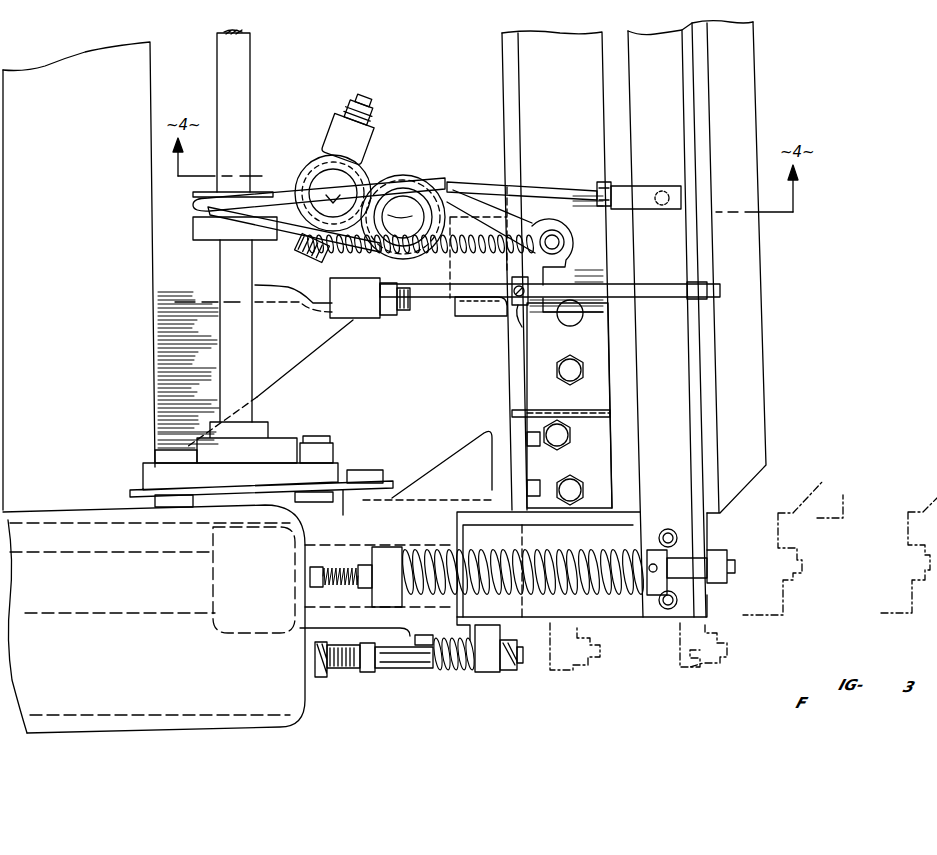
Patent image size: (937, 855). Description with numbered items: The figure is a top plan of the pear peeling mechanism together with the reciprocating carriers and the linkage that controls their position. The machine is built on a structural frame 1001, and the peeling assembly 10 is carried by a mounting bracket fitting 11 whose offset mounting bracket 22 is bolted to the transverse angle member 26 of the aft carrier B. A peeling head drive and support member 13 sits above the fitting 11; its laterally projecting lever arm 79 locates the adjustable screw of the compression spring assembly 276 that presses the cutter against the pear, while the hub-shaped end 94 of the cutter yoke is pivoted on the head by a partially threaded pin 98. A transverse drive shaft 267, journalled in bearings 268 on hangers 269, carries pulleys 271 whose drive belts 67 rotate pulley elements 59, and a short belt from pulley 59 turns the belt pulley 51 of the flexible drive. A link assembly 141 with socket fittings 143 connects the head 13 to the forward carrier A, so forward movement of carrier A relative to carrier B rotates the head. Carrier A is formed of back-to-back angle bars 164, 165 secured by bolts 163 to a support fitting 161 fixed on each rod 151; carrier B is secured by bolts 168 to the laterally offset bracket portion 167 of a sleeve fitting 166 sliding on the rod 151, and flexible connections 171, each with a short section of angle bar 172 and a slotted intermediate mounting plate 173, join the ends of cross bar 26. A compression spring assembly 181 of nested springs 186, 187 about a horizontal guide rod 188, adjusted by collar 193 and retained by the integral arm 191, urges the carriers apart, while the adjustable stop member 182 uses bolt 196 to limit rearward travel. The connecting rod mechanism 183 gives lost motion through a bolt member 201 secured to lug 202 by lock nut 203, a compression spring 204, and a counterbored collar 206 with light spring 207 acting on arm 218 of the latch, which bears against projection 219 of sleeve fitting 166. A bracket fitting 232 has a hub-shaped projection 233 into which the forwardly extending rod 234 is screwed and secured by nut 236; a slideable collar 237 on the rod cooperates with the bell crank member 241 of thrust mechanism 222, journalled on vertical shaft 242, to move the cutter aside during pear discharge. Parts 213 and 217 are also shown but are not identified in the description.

The structural frame 1001 is at (150, 107).
The transverse drive shaft 267 is at (248, 88).
The pulleys 271 is at (215, 238).
The drive belts 67 is at (195, 206).
The peeling head drive and support member 13 is at (304, 157).
The belt pulley 51 is at (320, 178).
The pulley elements 59 is at (405, 176).
The hub-shaped end 94 is at (333, 140).
The partially threaded pin 98 is at (366, 103).
The compression spring assembly 276 is at (328, 258).
The pear peeling assembly 10 is at (476, 130).
The link assembly 141 is at (524, 186).
The bell crank member 241 is at (588, 186).
The socket fittings 143 is at (632, 190).
The thrust mechanism 222 is at (569, 249).
The vertical shaft 242 is at (557, 236).
The forwardly extending rod 234 is at (625, 283).
The slideable collar 237 is at (527, 305).
The hub-shaped projection 233 is at (350, 320).
The nut 236 is at (392, 316).
The lever arm 79 is at (406, 310).
The bracket fitting 232 is at (300, 358).
The mounting bracket fitting 11 is at (472, 311).
The offset mounting bracket 22 is at (496, 316).
The transverse angle member 26 is at (504, 384).
The aft carrier member B is at (492, 359).
The carrier element A is at (776, 363).
The short section of angle bar 172 is at (612, 462).
The bolts 168 is at (545, 478).
The flexible connections 171 is at (504, 409).
The slotted intermediate mounting plate 173 is at (614, 412).
The laterally offset bracket portion 167 is at (462, 450).
The angle bar 164 is at (661, 323).
The angle bar 165 is at (724, 319).
The bearings 268 is at (288, 442).
The hangers 269 is at (140, 478).
The rod 151 is at (147, 612).
The support fitting 161 is at (617, 622).
The compression spring assembly 181 is at (547, 586).
The spring 187 is at (566, 548).
The integral arm 191 is at (390, 548).
The stop member 182 is at (336, 554).
The bolt 196 is at (352, 587).
The spring 186 is at (590, 548).
The horizontal guide rod 188 is at (690, 590).
The collar 193 is at (650, 540).
The bolts 163 is at (680, 541).
The compression spring 204 is at (463, 628).
The arm 218 is at (425, 628).
The bracket 217 is at (312, 645).
The elongated sleeve fitting 166 is at (389, 644).
The counterbored collar 206 is at (372, 672).
The light spring 207 is at (333, 668).
The connecting rod mechanism 183 is at (400, 672).
The spring 213 is at (465, 672).
The projection 219 is at (468, 673).
The lug 202 is at (488, 672).
The bolt member 201 is at (522, 650).
The lock nut 203 is at (508, 673).